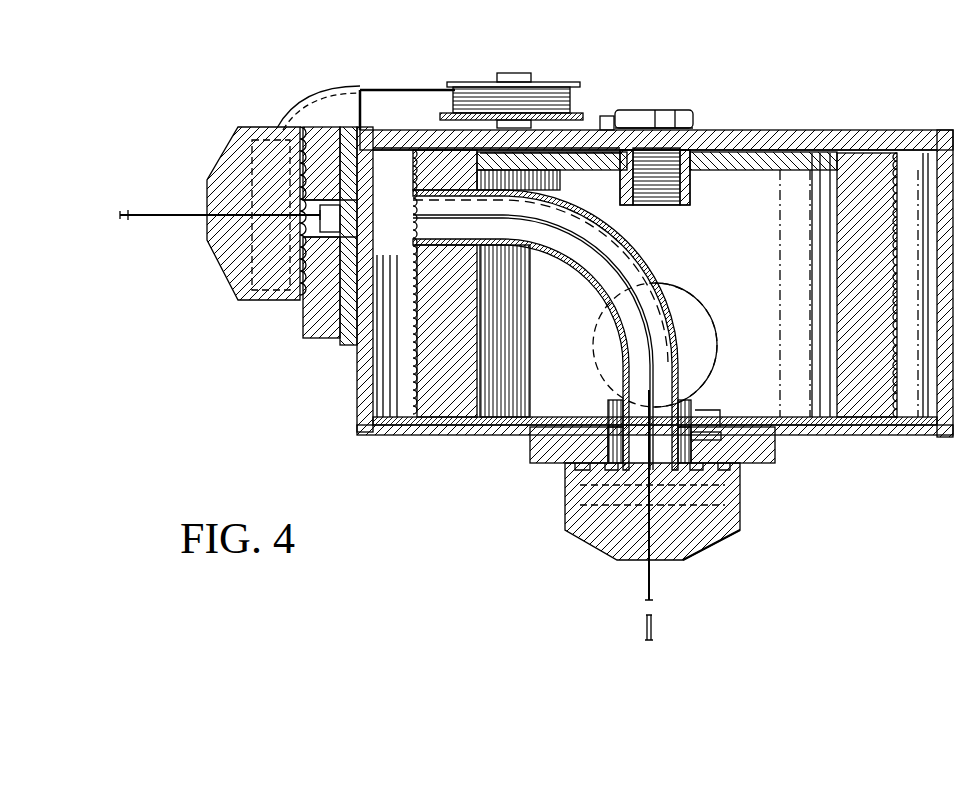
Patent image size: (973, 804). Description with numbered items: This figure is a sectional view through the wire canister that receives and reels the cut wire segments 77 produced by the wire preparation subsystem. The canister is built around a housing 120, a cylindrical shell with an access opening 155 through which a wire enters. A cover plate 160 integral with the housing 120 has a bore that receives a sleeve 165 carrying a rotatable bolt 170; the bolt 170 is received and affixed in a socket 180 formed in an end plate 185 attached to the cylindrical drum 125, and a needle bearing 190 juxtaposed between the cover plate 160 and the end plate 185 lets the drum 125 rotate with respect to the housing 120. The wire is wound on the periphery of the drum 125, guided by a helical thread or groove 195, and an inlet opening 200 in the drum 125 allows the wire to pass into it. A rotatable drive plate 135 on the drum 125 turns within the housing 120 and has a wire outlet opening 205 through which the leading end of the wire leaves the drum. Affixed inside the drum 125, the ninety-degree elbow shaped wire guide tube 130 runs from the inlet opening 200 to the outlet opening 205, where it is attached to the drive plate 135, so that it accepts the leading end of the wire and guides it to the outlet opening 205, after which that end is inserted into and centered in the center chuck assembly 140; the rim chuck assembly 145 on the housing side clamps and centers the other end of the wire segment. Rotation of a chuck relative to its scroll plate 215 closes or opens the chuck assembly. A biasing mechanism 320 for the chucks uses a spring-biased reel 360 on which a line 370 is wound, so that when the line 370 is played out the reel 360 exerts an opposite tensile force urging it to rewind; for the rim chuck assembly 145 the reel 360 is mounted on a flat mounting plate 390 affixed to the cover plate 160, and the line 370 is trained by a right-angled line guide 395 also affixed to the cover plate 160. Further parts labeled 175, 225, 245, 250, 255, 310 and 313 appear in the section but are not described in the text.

The cut wire segment 77 is at (170, 212).
The housing 120 is at (355, 414).
The cylindrical drum 125 is at (463, 350).
The wire guide tube 130 is at (578, 265).
The drive plate 135 is at (397, 432).
The center chuck assembly 140 is at (550, 538).
The rim chuck assembly 145 is at (205, 290).
The access opening 155 is at (362, 185).
The cover plate 160 is at (825, 130).
The sleeve 165 is at (685, 138).
The rotatable bolt 170 is at (690, 173).
The bolt 175 is at (665, 108).
The socket 180 is at (690, 205).
The end plate 185 is at (780, 152).
The needle bearing 190 is at (548, 152).
The helical thread or groove 195 is at (895, 165).
The inlet opening 200 is at (405, 222).
The wire outlet opening 205 is at (640, 397).
The scroll plate 215 is at (545, 450).
The chamfer 225 is at (727, 542).
The lock washer 245 is at (250, 302).
The seal ring 250 is at (717, 430).
The retainer 255 is at (710, 422).
The side fitting 310 is at (340, 340).
The passage 313 is at (353, 217).
The biasing mechanism 320 is at (520, 68).
The reel 360 is at (467, 82).
The line 370 is at (401, 90).
The flat mounting plate 390 is at (590, 118).
The right-angled line guide 395 is at (305, 108).